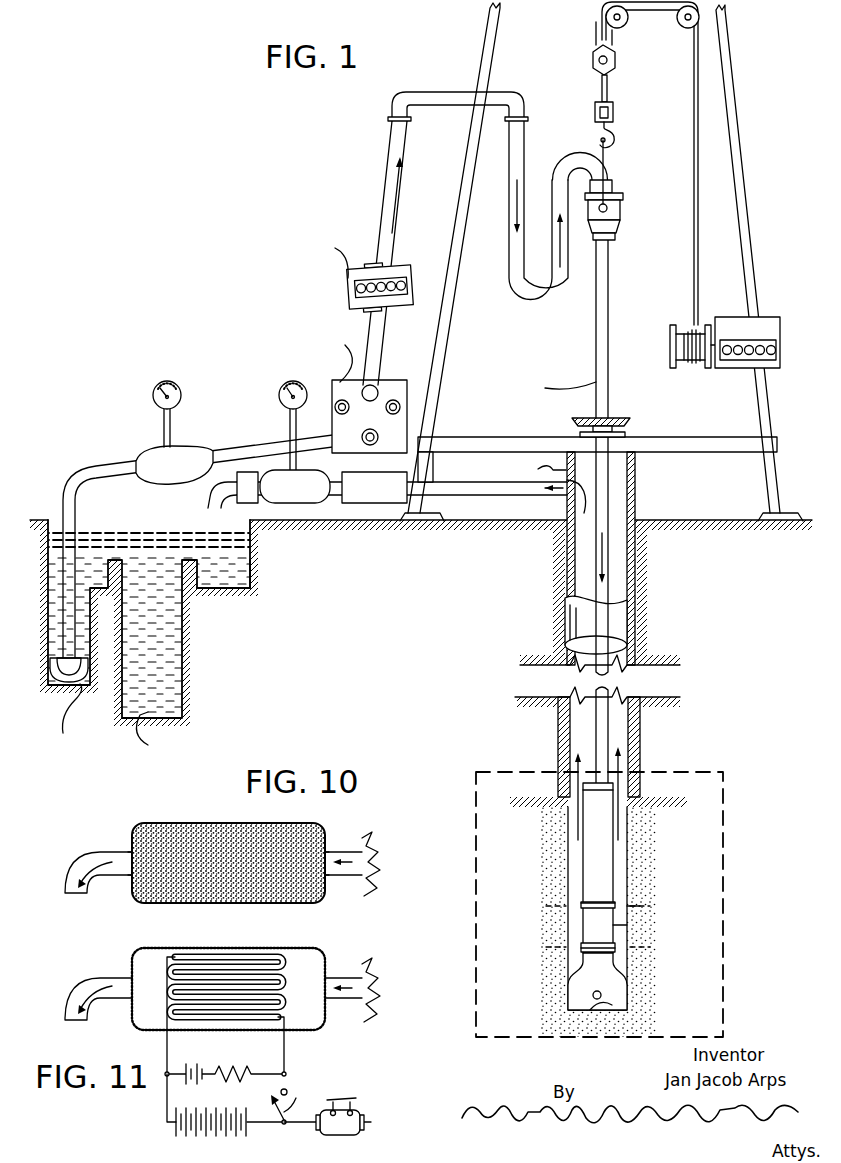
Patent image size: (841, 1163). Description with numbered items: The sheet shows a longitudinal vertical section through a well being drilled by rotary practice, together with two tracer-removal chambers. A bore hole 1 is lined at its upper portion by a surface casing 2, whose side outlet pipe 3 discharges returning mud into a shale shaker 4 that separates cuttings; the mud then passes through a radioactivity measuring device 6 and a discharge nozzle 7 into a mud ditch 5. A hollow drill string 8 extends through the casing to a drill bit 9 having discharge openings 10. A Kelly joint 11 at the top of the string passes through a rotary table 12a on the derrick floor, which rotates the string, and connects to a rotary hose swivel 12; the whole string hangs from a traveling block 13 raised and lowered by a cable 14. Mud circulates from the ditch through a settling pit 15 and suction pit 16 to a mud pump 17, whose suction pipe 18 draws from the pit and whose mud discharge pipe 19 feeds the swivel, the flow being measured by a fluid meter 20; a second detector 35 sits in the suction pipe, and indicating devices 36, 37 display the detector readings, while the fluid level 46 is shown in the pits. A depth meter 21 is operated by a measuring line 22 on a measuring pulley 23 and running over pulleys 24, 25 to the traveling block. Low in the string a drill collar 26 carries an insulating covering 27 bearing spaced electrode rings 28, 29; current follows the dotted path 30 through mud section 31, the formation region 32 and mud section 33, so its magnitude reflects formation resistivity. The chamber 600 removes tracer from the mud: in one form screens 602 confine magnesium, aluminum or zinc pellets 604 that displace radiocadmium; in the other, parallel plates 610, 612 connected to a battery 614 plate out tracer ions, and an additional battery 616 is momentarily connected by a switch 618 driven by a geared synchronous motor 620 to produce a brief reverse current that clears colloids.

In FIG. 1, the bore hole 1 is at (575, 738).
In FIG. 1, the surface casing 2 is at (636, 497).
In FIG. 1, the side outlet pipe 3 is at (522, 490).
In FIG. 1, the shale shaker 4 is at (390, 478).
In FIG. 1, the mud ditch 5 is at (246, 571).
In FIG. 1, the radioactivity measuring device 6 is at (312, 505).
In FIG. 10, the radioactivity measuring device 6 is at (362, 840).
In FIG. 11, the radioactivity measuring device 6 is at (362, 976).
In FIG. 1, the discharge nozzle 7 is at (218, 498).
In FIG. 10, the discharge nozzle 7 is at (100, 858).
In FIG. 11, the discharge nozzle 7 is at (92, 986).
In FIG. 1, the drill string 8 is at (609, 472).
In FIG. 1, the drill bit 9 is at (615, 985).
In FIG. 1, the discharge openings 10 is at (593, 995).
In FIG. 1, the Kelly joint 11 is at (609, 268).
In FIG. 1, the rotary hose swivel 12 is at (616, 211).
In FIG. 1, the rotary table 12a is at (648, 401).
In FIG. 1, the traveling block 13 is at (592, 60).
In FIG. 1, the cable 14 is at (595, 38).
In FIG. 1, the settling pit 15 is at (178, 645).
In FIG. 1, the suction pit 16 is at (76, 621).
In FIG. 1, the mud pump 17 is at (390, 386).
In FIG. 1, the suction pipe 18 is at (96, 472).
In FIG. 1, the mud discharge pipe 19 is at (395, 135).
In FIG. 1, the fluid meter 20 is at (412, 281).
In FIG. 1, the depth meter 21 is at (768, 325).
In FIG. 1, the measuring line 22 is at (696, 100).
In FIG. 1, the measuring pulley 23 is at (702, 324).
In FIG. 1, the pulley 24 is at (690, 29).
In FIG. 1, the pulley 25 is at (627, 19).
In FIG. 1, the drill collar 26 is at (606, 800).
In FIG. 1, the insulating covering 27 is at (600, 850).
In FIG. 1, the electrode ring 28 is at (586, 900).
In FIG. 1, the electrode ring 29 is at (590, 946).
In FIG. 1, the current path 30 is at (640, 912).
In FIG. 1, the mud section 31 is at (618, 903).
In FIG. 1, the formation region 32 is at (631, 940).
In FIG. 1, the mud section 33 is at (618, 950).
In FIG. 1, the second detector 35 is at (140, 448).
In FIG. 1, the indicating device 36 is at (293, 381).
In FIG. 1, the indicating device 37 is at (170, 381).
In FIG. 1, the fluid level 46 is at (118, 538).
In FIG. 1, the chamber 600 is at (247, 478).
In FIG. 10, the chamber 600 is at (248, 823).
In FIG. 11, the chamber 600 is at (216, 950).
In FIG. 10, the screens 602 is at (128, 872).
In FIG. 10, the pellets or shavings 604 is at (165, 832).
In FIG. 11, the parallel plates 610 is at (241, 956).
In FIG. 11, the parallel plates 612 is at (285, 1000).
In FIG. 11, the battery 614 is at (192, 1065).
In FIG. 11, the additional battery 616 is at (167, 1112).
In FIG. 11, the switch 618 is at (288, 1100).
In FIG. 11, the geared synchronous motor 620 is at (358, 1118).